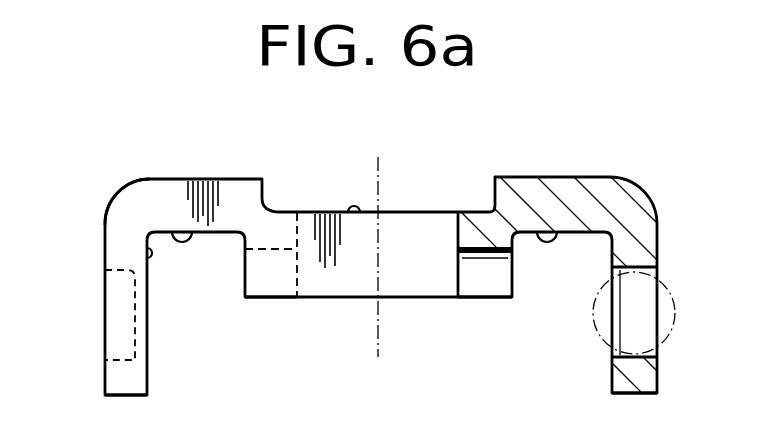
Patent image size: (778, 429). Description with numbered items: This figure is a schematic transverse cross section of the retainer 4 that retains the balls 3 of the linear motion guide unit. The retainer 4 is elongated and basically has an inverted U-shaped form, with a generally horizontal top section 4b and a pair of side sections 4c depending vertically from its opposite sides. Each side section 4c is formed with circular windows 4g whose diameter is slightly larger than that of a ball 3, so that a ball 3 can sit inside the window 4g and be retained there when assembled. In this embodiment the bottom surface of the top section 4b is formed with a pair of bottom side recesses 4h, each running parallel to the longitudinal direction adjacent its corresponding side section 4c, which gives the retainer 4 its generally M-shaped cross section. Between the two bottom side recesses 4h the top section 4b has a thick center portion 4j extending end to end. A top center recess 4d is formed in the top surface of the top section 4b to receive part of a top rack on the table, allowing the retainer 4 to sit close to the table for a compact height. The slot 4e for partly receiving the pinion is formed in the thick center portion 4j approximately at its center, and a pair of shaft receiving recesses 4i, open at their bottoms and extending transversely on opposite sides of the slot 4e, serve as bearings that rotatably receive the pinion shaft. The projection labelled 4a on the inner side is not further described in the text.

The ball 3 is at (675, 294).
The retainer 4 is at (657, 232).
The projection 4a is at (147, 249).
The top section 4b is at (113, 204).
The side section 4c is at (642, 380).
The top center recess 4d is at (358, 215).
The slot 4e is at (458, 241).
The window 4g is at (642, 332).
The bottom side recess 4h is at (556, 231).
The shaft receiving recess 4i is at (482, 277).
The thick center portion 4j is at (270, 283).